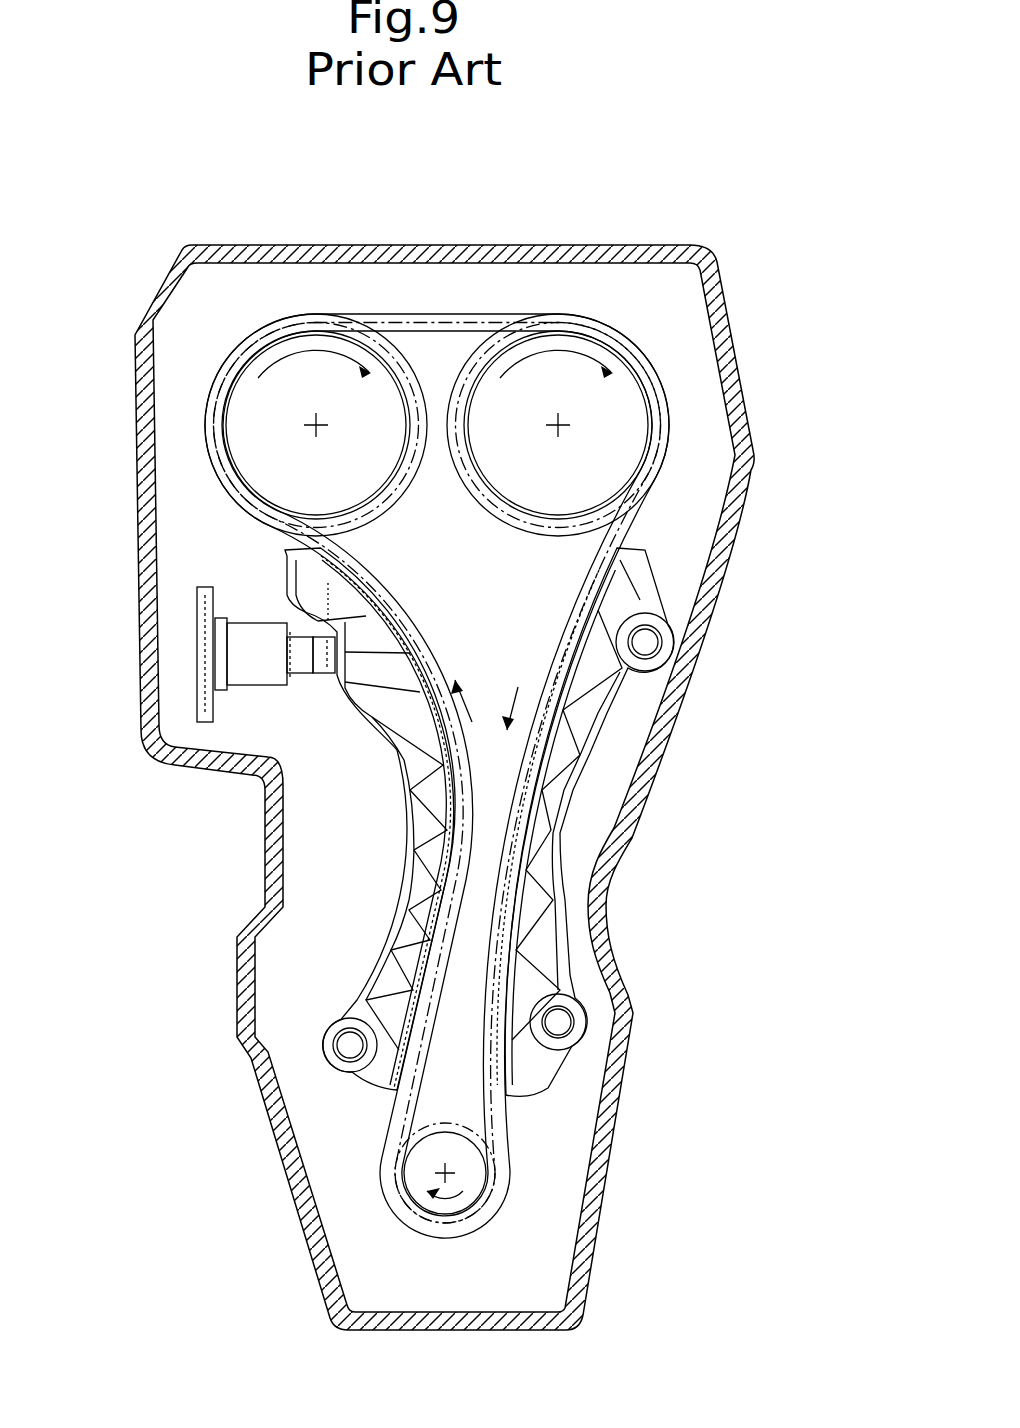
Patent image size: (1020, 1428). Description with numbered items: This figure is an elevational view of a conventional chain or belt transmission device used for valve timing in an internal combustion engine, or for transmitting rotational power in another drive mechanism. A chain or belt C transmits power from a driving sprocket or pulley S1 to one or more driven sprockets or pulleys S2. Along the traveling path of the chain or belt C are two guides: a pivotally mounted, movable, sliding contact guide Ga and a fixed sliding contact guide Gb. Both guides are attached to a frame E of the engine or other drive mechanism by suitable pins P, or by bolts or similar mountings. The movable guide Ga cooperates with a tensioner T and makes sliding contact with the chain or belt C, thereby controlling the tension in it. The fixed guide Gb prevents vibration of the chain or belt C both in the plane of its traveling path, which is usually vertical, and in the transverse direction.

The chain or belt C is at (452, 312).
The driven sprocket or pulley S2 is at (240, 420).
The driving sprocket or pulley S1 is at (478, 1174).
The frame E is at (135, 585).
The pin P is at (647, 643).
The movable sliding contact guide Ga is at (405, 867).
The fixed sliding contact guide Gb is at (592, 797).
The tensioner T is at (253, 692).